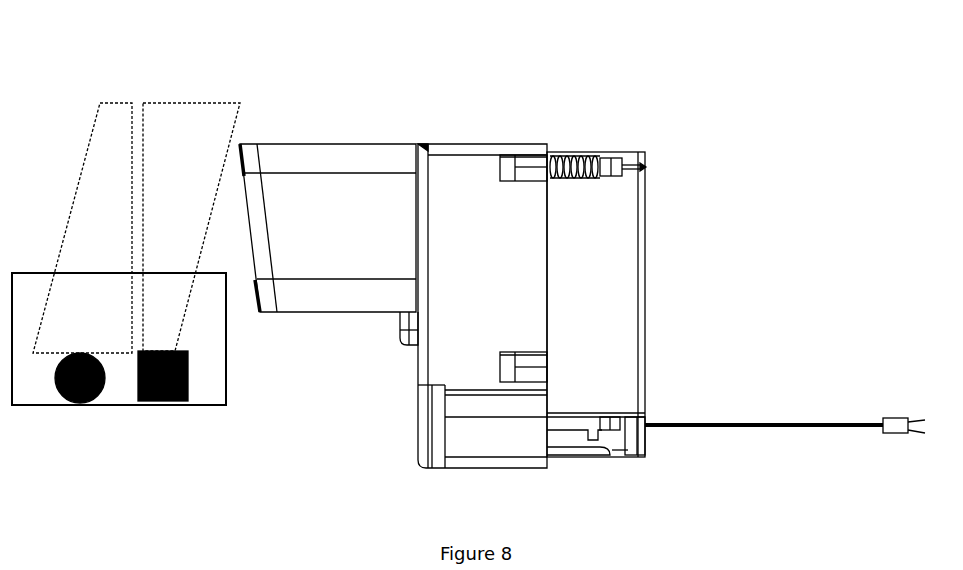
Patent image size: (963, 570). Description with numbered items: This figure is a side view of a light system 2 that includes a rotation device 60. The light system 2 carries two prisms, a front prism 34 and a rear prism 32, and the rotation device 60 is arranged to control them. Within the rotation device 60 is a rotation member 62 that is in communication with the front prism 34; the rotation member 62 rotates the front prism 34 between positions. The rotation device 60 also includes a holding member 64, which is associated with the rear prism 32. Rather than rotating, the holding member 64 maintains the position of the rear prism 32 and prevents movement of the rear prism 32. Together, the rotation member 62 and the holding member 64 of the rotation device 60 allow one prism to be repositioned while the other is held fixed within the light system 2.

The light system 2 is at (718, 125).
The rear prism 32 is at (187, 127).
The front prism 34 is at (110, 118).
The rotation device 60 is at (259, 422).
The rotation member 62 is at (73, 405).
The holding member 64 is at (165, 401).